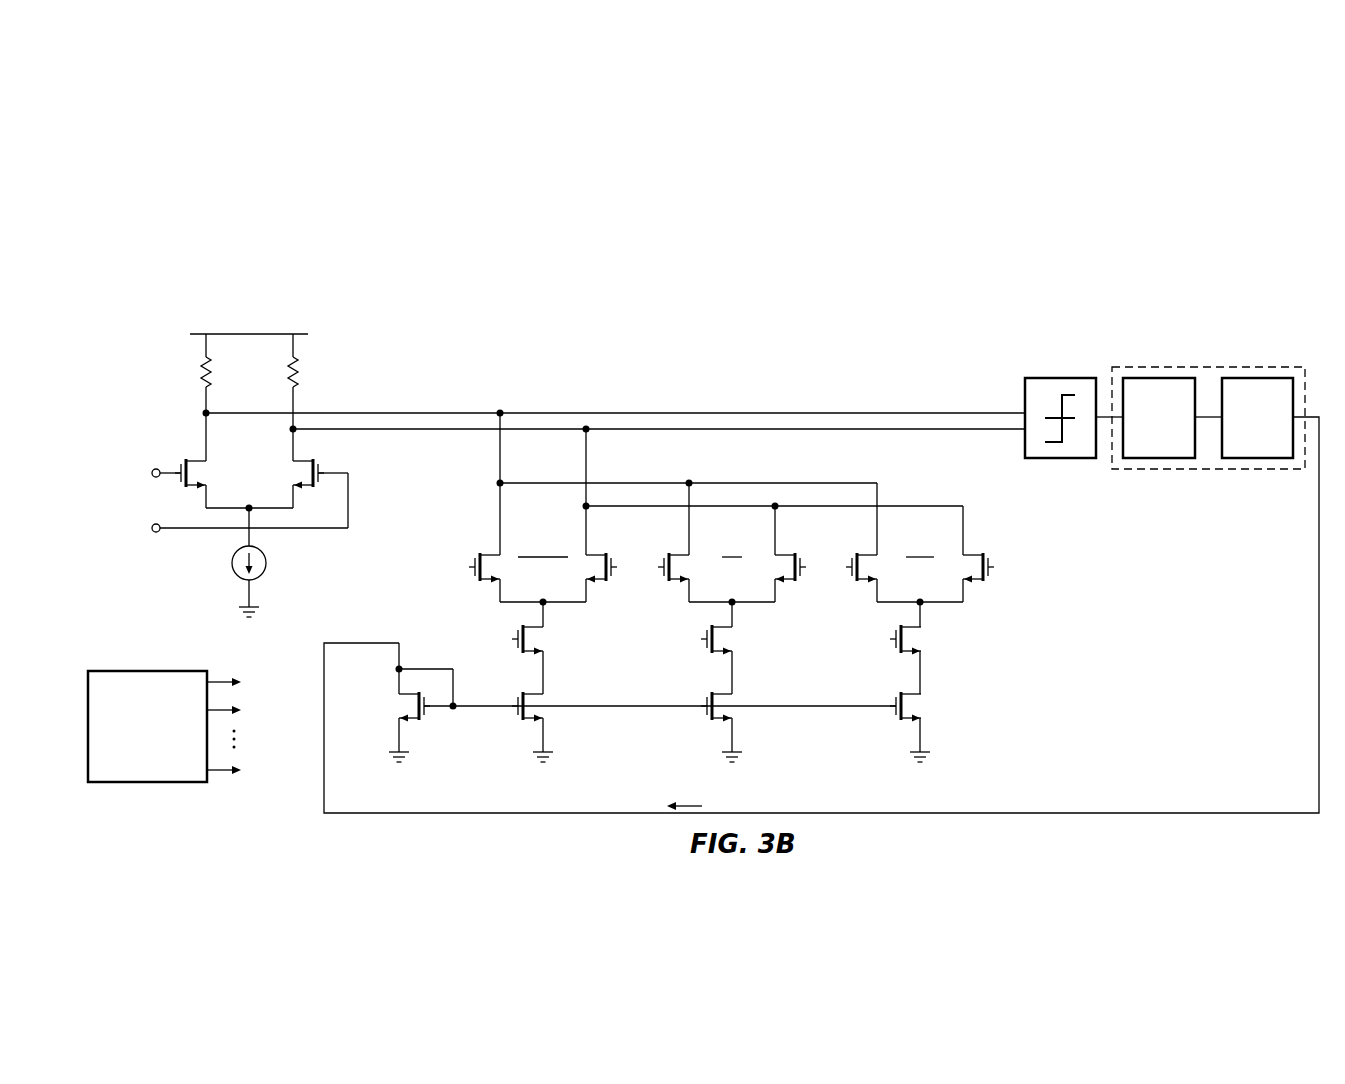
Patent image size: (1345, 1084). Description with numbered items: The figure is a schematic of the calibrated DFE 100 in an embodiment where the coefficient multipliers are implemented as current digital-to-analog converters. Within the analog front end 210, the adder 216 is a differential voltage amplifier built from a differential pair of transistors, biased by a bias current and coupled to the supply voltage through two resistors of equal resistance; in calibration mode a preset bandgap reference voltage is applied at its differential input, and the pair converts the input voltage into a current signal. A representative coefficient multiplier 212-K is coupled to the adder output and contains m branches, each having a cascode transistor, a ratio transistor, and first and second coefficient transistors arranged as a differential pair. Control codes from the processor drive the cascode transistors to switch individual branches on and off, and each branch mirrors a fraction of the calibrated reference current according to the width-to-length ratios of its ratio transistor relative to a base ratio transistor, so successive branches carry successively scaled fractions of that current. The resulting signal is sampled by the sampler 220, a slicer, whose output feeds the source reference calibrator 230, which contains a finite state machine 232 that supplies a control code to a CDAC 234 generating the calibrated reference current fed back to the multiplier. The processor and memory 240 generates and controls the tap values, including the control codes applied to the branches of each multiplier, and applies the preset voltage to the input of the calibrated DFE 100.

The calibrated DFE 100 is at (1262, 170).
The analog front end 210 is at (1007, 252).
The adder 216 is at (337, 296).
The coefficient multiplier 212-K is at (360, 394).
The sampler 220 is at (1063, 378).
The source reference calibrator 230 is at (1205, 367).
The finite state machine 232 is at (1160, 458).
The CDAC 234 is at (1258, 458).
The processor and memory 240 is at (150, 671).